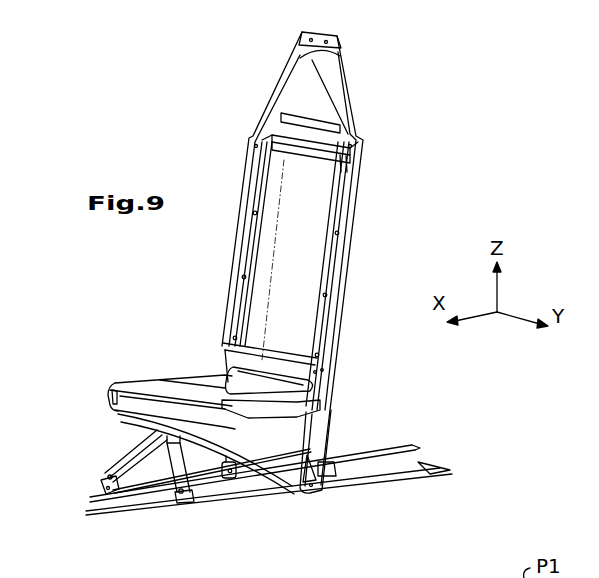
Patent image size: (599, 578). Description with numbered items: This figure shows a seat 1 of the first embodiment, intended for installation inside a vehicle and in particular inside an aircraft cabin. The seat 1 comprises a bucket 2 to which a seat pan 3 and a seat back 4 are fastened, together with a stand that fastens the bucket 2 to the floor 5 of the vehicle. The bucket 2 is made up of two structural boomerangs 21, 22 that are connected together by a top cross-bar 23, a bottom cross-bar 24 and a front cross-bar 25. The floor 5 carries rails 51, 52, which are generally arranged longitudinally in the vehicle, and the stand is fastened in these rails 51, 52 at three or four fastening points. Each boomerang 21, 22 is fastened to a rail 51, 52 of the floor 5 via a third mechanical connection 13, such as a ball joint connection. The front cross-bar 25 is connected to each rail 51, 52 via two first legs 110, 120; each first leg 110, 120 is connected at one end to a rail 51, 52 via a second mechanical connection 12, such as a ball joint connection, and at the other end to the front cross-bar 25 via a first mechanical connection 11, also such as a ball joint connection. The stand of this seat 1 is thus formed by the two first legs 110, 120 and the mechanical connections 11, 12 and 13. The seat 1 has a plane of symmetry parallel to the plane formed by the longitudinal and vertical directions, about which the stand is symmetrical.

The seat 1 is at (420, 88).
The bucket 2 is at (378, 271).
The seat pan 3 is at (163, 373).
The seat back 4 is at (307, 72).
The floor 5 is at (450, 477).
The first mechanical connection 11 is at (116, 416).
The second mechanical connection 12 is at (100, 492).
The third mechanical connection 13 is at (300, 490).
The structural boomerang 21 is at (325, 470).
The structural boomerang 22 is at (208, 455).
The top cross-bar 23 is at (321, 150).
The bottom cross-bar 24 is at (338, 380).
The front cross-bar 25 is at (107, 400).
The rail 51 is at (408, 453).
The rail 52 is at (357, 453).
The first leg 110 is at (168, 455).
The first leg 120 is at (128, 462).